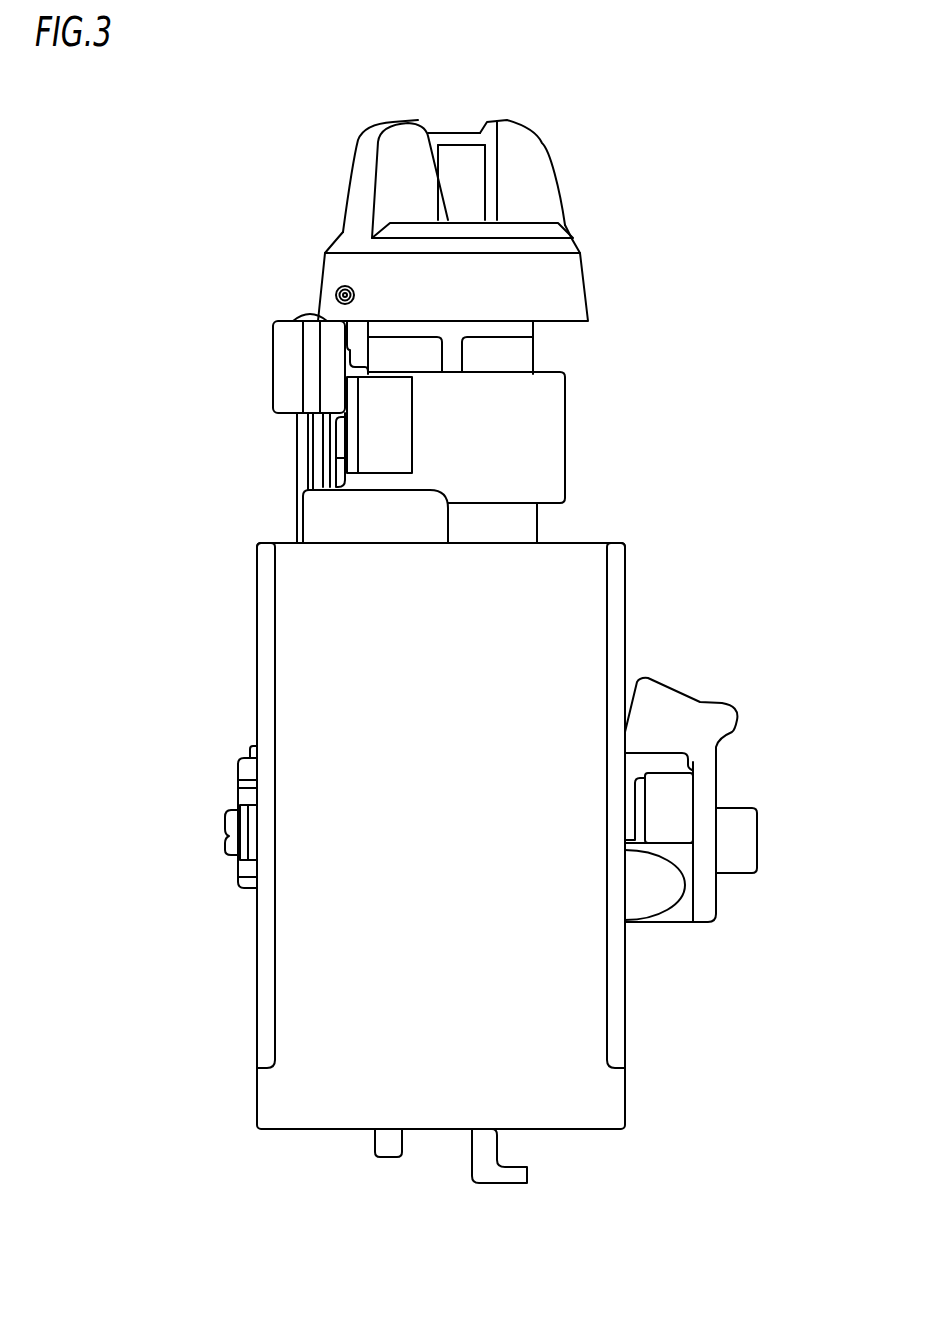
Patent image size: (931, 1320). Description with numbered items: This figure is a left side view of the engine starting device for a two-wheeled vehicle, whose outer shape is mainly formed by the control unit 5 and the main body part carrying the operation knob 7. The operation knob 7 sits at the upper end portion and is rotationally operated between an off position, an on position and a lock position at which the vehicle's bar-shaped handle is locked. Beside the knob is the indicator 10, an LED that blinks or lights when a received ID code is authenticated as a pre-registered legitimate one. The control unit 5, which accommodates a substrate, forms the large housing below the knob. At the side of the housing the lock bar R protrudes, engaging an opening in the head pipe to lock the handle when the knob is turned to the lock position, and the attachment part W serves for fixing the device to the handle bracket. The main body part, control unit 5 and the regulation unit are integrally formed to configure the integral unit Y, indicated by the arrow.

The operation knob 7 is at (327, 277).
The indicator 10 is at (285, 372).
The control unit 5 is at (288, 613).
The attachment part W is at (679, 913).
The lock bar R is at (757, 838).
The integral unit Y is at (680, 177).